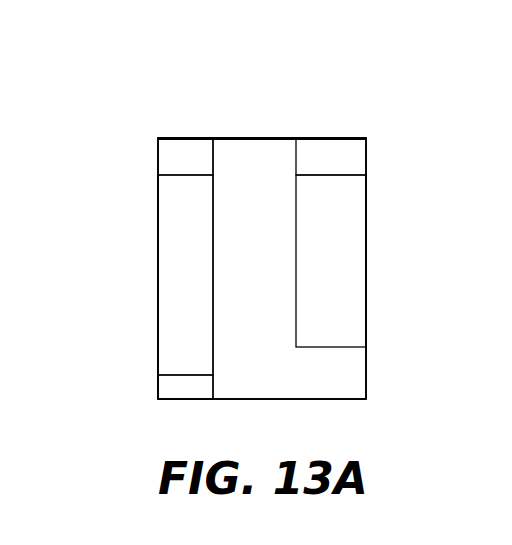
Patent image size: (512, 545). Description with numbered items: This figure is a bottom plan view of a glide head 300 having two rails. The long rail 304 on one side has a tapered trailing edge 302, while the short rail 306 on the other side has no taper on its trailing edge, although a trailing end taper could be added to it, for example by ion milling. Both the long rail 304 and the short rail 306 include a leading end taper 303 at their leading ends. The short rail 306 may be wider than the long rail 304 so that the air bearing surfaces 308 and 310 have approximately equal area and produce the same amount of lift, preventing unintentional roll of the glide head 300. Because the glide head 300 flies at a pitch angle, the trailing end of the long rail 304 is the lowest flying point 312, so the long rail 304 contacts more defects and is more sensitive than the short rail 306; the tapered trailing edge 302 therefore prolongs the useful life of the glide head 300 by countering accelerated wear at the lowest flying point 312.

The glide head 300 is at (161, 101).
The tapered trailing edge 302 is at (177, 395).
The leading end taper 303 is at (173, 158).
The long rail 304 is at (158, 293).
The short rail 306 is at (368, 288).
The air bearing surface 308 is at (173, 225).
The air bearing surface 310 is at (348, 238).
The lowest flying point 312 is at (175, 370).